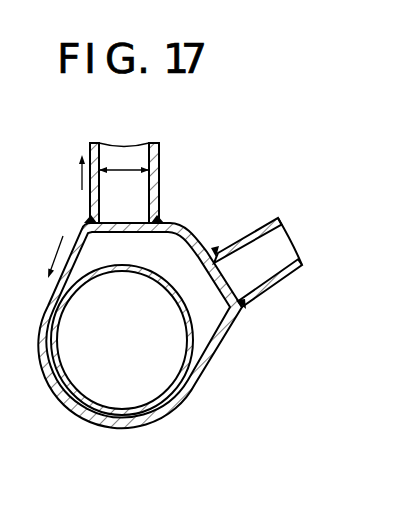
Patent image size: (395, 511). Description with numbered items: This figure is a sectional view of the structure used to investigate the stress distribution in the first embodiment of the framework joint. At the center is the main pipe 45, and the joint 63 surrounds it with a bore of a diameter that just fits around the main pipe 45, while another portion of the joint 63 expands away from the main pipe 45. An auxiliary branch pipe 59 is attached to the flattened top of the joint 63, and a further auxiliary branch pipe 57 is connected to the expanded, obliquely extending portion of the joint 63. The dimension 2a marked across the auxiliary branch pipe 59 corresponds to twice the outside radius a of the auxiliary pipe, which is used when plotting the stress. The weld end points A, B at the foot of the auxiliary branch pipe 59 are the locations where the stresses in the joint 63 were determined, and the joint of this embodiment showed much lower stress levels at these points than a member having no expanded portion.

The auxiliary pipe outside diameter 2a is at (124, 170).
The auxiliary branch pipe 59 is at (159, 156).
The joint 63 is at (200, 246).
The auxiliary branch pipe 57 is at (276, 290).
The main pipe 45 is at (168, 283).
The weld end point A is at (78, 225).
The weld end point B is at (88, 214).